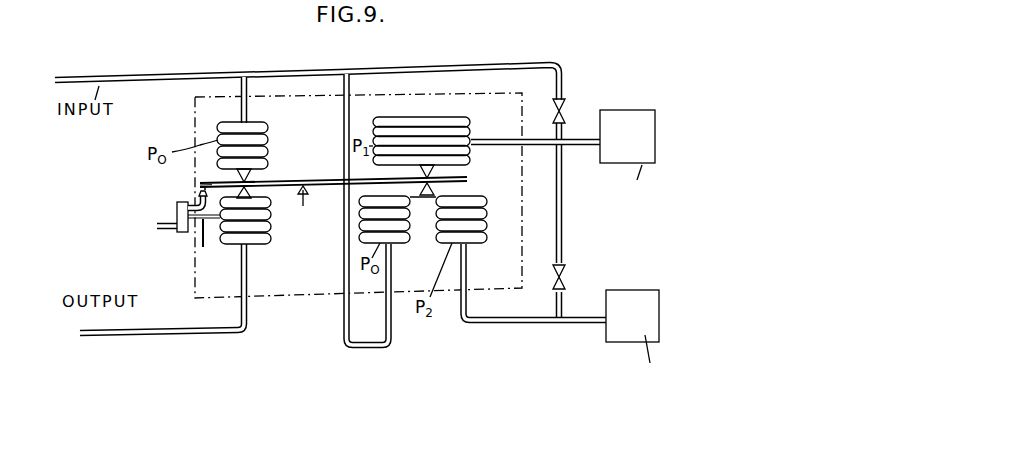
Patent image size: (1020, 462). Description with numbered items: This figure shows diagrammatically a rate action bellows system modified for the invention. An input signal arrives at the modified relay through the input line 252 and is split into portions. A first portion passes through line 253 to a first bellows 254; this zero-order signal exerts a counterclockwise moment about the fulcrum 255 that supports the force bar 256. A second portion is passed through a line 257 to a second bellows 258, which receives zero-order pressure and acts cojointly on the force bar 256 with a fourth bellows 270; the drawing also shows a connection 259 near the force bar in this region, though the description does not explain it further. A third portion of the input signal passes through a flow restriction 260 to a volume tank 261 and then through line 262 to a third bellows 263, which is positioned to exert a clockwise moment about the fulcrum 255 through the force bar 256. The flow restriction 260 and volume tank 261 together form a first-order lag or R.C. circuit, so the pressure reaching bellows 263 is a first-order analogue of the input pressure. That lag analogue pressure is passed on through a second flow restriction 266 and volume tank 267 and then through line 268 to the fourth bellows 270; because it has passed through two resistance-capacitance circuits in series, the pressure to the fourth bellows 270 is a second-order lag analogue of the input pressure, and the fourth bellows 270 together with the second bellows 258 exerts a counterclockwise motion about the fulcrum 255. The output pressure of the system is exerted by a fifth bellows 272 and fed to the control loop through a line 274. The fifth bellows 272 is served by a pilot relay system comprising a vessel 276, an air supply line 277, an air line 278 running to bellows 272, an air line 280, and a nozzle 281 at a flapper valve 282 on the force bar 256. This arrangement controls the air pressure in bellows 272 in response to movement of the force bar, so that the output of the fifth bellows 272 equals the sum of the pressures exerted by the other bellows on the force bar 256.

The input line 252 is at (164, 76).
The line 253 is at (248, 110).
The first bellows 254 is at (264, 140).
The fulcrum 255 is at (309, 209).
The force bar 256 is at (294, 178).
The line 257 is at (353, 105).
The second bellows 258 is at (403, 243).
The pivot 259 is at (432, 190).
The flow restriction 260 is at (564, 108).
The volume tank 261 is at (647, 120).
The line 262 is at (488, 138).
The third bellows 263 is at (434, 131).
The second flow restriction 266 is at (567, 276).
The volume tank 267 is at (646, 294).
The line 268 is at (505, 326).
The fourth bellows 270 is at (482, 243).
The fifth bellows 272 is at (270, 244).
The line 274 is at (197, 338).
The vessel 276 is at (177, 210).
The air supply line 277 is at (165, 230).
The air line 278 is at (215, 242).
The air line 280 is at (193, 199).
The nozzle 281 is at (199, 190).
The flapper valve 282 is at (213, 177).